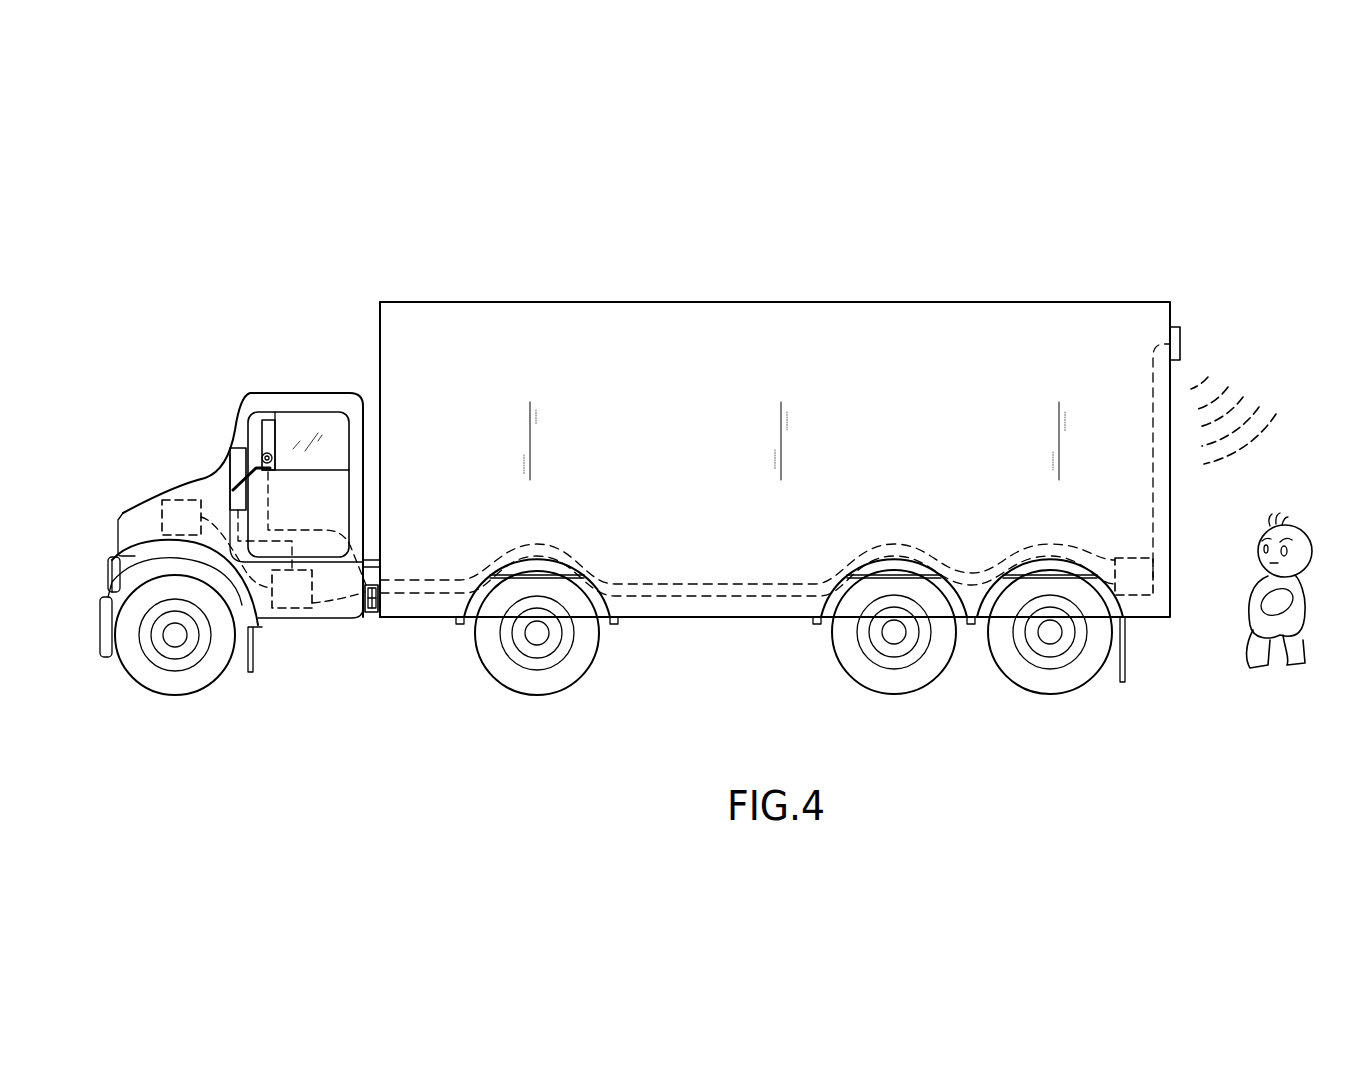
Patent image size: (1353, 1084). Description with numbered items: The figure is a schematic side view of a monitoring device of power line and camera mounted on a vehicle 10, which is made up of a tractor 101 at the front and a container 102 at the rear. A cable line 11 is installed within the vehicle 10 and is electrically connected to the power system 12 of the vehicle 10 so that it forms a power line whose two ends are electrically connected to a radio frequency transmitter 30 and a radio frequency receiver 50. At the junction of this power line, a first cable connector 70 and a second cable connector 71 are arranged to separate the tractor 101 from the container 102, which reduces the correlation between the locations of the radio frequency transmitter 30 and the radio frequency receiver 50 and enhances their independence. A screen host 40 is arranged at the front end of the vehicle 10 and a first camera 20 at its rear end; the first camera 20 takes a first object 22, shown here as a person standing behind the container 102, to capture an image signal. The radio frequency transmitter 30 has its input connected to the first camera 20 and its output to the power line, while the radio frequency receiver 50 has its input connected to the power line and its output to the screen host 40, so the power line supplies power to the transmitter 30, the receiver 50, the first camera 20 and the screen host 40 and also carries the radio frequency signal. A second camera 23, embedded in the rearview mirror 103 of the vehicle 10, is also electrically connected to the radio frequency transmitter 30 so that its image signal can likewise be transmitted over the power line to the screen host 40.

The vehicle 10 is at (573, 226).
The tractor 101 is at (340, 397).
The container 102 is at (552, 300).
The rearview mirror 103 is at (270, 423).
The cable line 11 is at (700, 597).
The power system 12 is at (182, 500).
The first camera 20 is at (1180, 343).
The first object 22 is at (1299, 522).
The second camera 23 is at (264, 457).
The radio frequency transmitter 30 is at (1135, 584).
The screen host 40 is at (238, 474).
The radio frequency receiver 50 is at (289, 603).
The first cable connector 70 is at (366, 613).
The second cable connector 71 is at (378, 613).